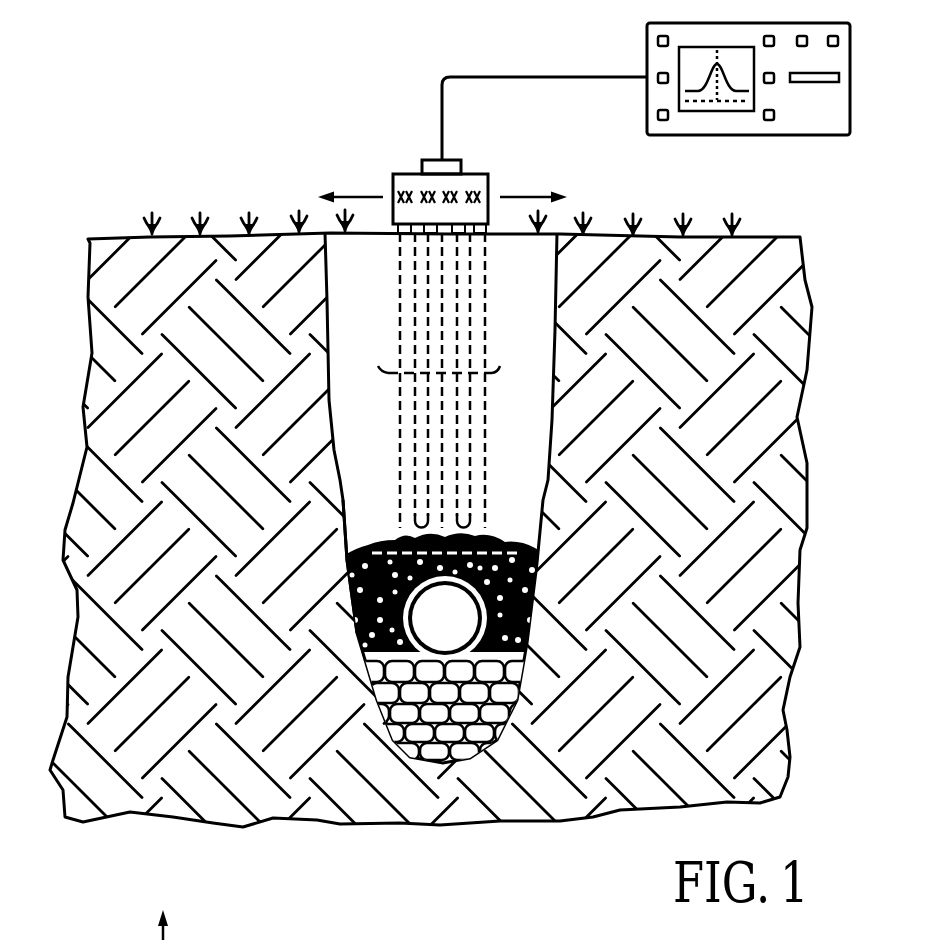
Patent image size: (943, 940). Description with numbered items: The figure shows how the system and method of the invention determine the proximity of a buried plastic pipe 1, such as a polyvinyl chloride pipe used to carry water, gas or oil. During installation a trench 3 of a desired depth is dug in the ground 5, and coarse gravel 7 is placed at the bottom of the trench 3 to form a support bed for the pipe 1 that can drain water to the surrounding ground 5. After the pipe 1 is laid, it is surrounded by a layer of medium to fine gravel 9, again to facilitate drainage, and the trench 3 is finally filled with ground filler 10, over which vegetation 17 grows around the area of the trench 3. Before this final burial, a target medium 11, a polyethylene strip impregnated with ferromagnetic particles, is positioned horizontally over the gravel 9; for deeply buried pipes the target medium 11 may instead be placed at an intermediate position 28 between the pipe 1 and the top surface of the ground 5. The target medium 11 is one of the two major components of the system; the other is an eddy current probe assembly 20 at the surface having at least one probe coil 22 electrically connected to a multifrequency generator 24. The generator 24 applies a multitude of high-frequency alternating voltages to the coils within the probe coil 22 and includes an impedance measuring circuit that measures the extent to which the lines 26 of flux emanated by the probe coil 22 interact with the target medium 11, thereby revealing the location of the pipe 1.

The plastic pipe 1 is at (488, 660).
The trench 3 is at (309, 282).
The ground 5 is at (101, 220).
The coarse gravel 7 is at (407, 753).
The layer of medium to fine gravel 9 is at (540, 583).
The ground filler 10 is at (528, 308).
The target medium 11 is at (388, 537).
The vegetation 17 is at (729, 228).
The eddy current probe assembly 20 is at (703, 93).
The probe coil 22 is at (494, 190).
The multifrequency generator 24 is at (720, 123).
The lines of flux 26 is at (488, 409).
The intermediate position 28 is at (392, 374).